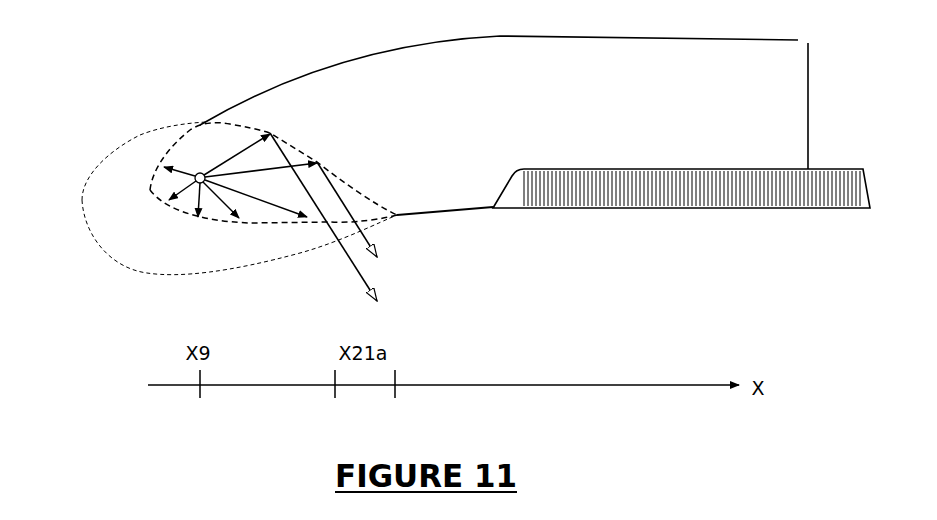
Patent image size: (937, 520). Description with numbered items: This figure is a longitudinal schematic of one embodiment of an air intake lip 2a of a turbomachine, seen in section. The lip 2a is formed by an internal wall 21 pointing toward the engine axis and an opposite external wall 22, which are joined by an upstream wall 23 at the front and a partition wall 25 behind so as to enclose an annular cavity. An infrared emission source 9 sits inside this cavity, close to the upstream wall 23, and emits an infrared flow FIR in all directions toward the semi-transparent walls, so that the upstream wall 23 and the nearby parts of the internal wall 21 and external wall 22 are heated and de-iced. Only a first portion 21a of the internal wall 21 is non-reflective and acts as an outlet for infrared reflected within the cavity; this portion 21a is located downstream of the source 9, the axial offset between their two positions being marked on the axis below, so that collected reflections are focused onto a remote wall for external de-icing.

The lip 2a is at (133, 165).
The infrared emission source 9 is at (202, 173).
The internal wall 21 is at (280, 225).
The first portion of the internal wall 21a is at (371, 229).
The external wall 22 is at (192, 133).
The upstream wall 23 is at (151, 194).
The partition wall 25 is at (345, 182).
The infrared flow FIR is at (158, 281).